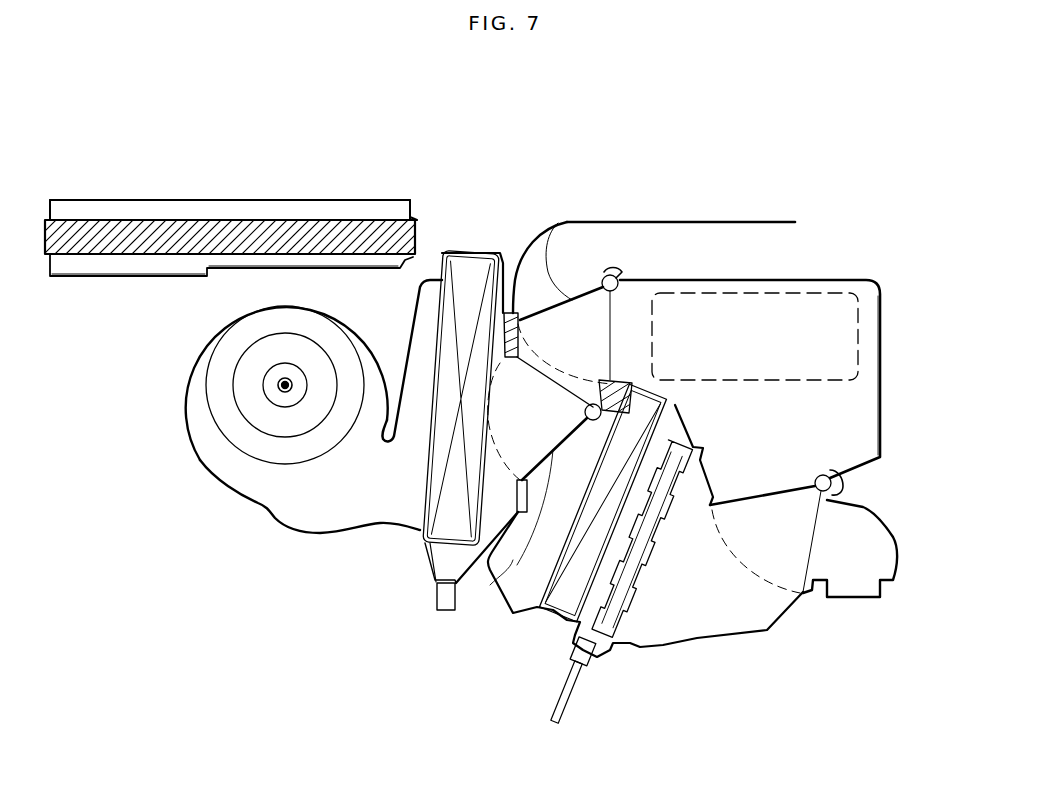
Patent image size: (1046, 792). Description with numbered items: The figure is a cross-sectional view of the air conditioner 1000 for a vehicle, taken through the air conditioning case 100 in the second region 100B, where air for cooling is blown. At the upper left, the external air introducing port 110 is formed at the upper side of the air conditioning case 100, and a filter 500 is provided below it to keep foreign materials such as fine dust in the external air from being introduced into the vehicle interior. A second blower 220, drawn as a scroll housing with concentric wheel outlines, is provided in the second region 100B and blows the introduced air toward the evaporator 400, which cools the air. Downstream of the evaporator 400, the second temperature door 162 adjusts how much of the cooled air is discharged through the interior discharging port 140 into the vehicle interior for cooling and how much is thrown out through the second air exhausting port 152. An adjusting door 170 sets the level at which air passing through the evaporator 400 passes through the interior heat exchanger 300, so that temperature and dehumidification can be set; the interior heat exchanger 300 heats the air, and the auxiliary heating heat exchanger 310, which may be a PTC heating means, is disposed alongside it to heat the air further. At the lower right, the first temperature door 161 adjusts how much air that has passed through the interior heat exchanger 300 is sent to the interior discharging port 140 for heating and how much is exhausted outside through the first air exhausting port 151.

The air conditioner for a vehicle 1000 is at (800, 142).
The air conditioning case 100 is at (642, 222).
The second region 100B is at (287, 486).
The external air introducing port 110 is at (150, 212).
The filter 500 is at (247, 236).
The interior discharging port 140 is at (860, 333).
The first air exhausting port 151 is at (853, 590).
The second air exhausting port 152 is at (778, 268).
The first temperature door 161 is at (768, 492).
The second temperature door 162 is at (576, 298).
The adjusting door 170 is at (495, 582).
The second blower 220 is at (253, 405).
The interior heat exchanger 300 is at (553, 607).
The auxiliary heating heat exchanger 310 is at (628, 580).
The evaporator 400 is at (445, 528).